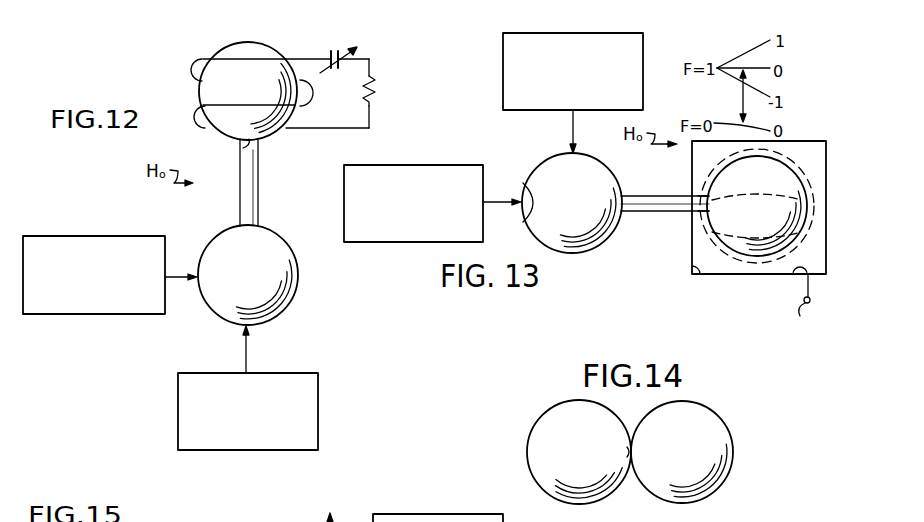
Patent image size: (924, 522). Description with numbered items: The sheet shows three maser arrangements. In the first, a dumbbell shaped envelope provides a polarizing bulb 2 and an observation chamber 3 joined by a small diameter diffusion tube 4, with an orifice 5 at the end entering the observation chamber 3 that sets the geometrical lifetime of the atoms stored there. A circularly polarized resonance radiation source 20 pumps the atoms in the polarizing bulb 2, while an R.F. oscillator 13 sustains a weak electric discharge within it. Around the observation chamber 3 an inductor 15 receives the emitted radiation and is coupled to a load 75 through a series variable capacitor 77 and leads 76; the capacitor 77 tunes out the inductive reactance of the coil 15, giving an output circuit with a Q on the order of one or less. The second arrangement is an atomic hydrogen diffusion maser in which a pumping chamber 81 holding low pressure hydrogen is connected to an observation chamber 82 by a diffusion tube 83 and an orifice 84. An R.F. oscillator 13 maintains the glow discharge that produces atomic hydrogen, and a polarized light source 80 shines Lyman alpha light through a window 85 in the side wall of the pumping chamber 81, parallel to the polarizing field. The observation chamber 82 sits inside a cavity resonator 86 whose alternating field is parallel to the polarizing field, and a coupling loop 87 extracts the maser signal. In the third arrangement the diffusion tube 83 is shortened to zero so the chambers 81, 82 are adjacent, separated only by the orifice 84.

In FIG. 12, the polarizing bulb 2 is at (256, 272).
In FIG. 12, the observation chamber 3 is at (258, 91).
In FIG. 12, the diffusion tube 4 is at (259, 183).
In FIG. 12, the orifice 5 is at (238, 146).
In FIG. 12, the R.F. oscillator 13 is at (318, 398).
In FIG. 13, the R.F. oscillator 13 is at (503, 75).
In FIG. 12, the inductor 15 is at (204, 57).
In FIG. 12, the circularly polarized resonance radiation source 20 is at (120, 316).
In FIG. 12, the load 75 is at (374, 92).
In FIG. 12, the leads 76 is at (308, 57).
In FIG. 12, the series variable capacitor 77 is at (341, 50).
In FIG. 13, the polarized light source 80 is at (443, 163).
In FIG. 13, the pumping chamber 81 is at (585, 194).
In FIG. 14, the pumping chamber 81 is at (583, 446).
In FIG. 13, the observation chamber 82 is at (792, 219).
In FIG. 14, the observation chamber 82 is at (693, 446).
In FIG. 13, the diffusion tube 83 is at (646, 206).
In FIG. 13, the orifice 84 is at (706, 207).
In FIG. 14, the orifice 84 is at (629, 452).
In FIG. 13, the window 85 is at (523, 183).
In FIG. 13, the cavity resonator 86 is at (700, 276).
In FIG. 13, the coupling loop 87 is at (793, 278).